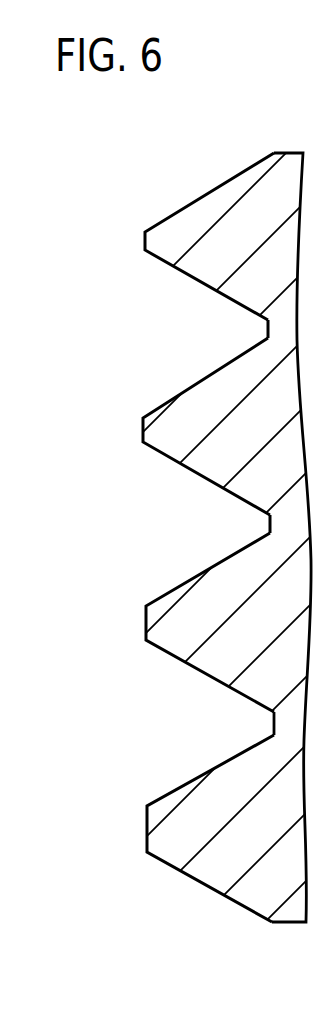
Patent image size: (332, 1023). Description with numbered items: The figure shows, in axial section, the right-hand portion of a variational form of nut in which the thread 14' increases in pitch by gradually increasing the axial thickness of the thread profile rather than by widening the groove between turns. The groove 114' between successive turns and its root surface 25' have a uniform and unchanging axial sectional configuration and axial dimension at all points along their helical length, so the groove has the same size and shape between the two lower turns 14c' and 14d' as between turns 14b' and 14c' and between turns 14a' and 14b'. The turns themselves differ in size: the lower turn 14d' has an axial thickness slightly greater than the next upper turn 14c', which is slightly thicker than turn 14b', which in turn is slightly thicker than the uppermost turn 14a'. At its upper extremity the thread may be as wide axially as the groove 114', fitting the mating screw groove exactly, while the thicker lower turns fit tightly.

The thread 14' is at (230, 560).
The turn 14a' is at (170, 236).
The turn 14b' is at (165, 426).
The turn 14c' is at (167, 622).
The turn 14d' is at (168, 828).
The groove 114' is at (198, 324).
The root surface 25' is at (208, 518).